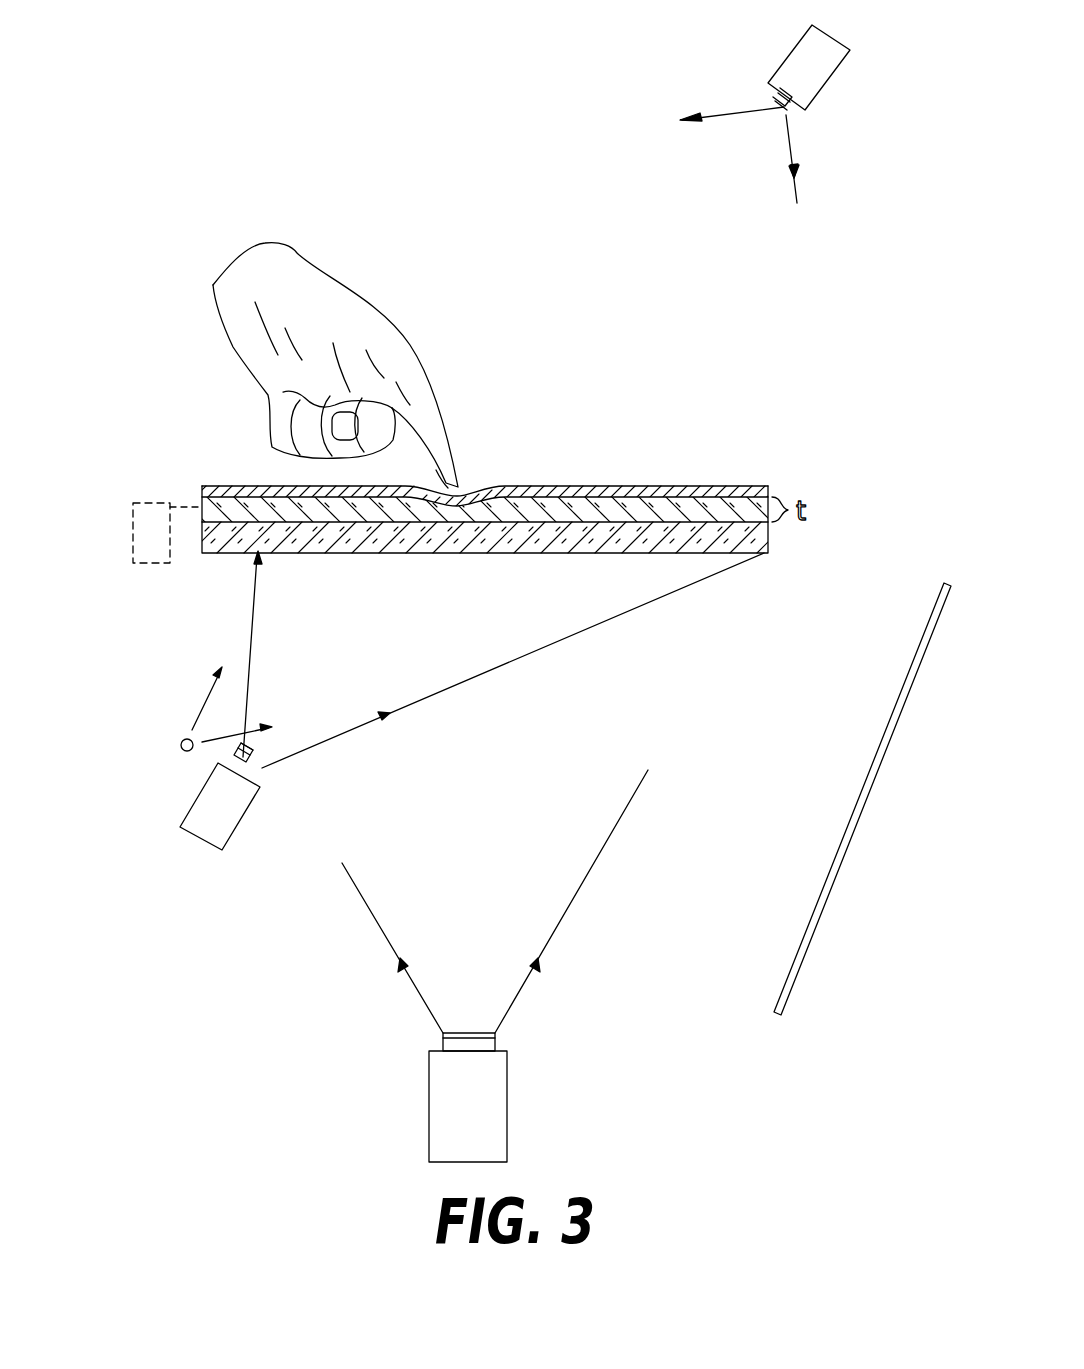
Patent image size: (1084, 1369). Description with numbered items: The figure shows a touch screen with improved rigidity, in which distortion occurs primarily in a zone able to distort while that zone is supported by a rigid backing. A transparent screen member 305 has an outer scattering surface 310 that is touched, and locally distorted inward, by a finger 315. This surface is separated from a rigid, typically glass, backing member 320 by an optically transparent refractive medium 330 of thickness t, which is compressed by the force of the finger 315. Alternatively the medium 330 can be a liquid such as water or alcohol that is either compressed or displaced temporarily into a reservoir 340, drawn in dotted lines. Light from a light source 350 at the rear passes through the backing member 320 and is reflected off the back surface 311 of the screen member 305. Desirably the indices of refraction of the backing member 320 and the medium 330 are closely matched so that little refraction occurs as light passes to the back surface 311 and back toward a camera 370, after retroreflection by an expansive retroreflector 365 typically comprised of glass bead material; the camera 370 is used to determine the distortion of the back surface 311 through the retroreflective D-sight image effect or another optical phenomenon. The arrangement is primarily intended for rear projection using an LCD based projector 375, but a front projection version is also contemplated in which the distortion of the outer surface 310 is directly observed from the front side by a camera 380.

The transparent screen member 305 is at (732, 488).
The outer scattering surface 310 is at (690, 487).
The back surface 311 is at (594, 490).
The finger 315 is at (452, 393).
The rigid backing member 320 is at (770, 538).
The optically transparent refractive medium 330 is at (612, 512).
The reservoir 340 is at (134, 503).
The light source 350 is at (181, 740).
The expansive retroreflector 365 is at (805, 945).
The camera 370 is at (200, 840).
The LCD based projector 375 is at (508, 1108).
The camera 380 is at (790, 52).